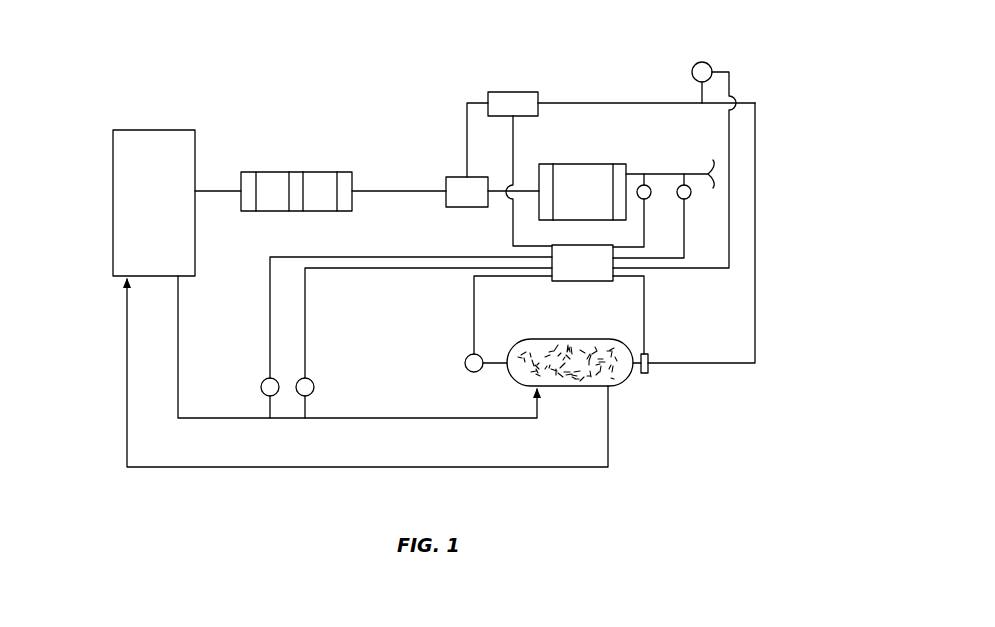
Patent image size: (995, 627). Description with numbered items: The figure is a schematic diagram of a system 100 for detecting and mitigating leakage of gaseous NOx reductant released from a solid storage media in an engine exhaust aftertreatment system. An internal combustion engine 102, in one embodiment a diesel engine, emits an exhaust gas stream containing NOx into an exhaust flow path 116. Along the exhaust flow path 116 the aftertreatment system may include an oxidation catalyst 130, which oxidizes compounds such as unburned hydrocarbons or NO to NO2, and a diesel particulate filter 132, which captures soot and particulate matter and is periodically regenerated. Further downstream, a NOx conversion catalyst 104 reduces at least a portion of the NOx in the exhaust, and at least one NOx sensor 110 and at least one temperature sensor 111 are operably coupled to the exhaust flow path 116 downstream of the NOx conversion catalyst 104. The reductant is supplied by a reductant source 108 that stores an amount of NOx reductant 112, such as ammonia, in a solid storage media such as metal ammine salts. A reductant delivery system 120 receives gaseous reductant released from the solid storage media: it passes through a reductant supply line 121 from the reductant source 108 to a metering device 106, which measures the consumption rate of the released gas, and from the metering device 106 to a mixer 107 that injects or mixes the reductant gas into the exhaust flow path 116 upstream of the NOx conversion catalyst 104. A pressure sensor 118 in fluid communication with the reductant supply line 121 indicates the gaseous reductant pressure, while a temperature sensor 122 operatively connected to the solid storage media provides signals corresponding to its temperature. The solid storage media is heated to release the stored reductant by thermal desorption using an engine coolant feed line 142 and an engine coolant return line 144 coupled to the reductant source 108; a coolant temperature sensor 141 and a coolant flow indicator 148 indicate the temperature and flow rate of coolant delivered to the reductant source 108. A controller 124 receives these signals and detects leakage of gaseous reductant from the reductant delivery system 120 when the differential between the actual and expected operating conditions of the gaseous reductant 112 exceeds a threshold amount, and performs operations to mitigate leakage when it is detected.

The system 100 is at (224, 55).
The internal combustion engine 102 is at (173, 216).
The NOx conversion catalyst 104 is at (602, 208).
The metering device 106 is at (515, 92).
The mixer 107 is at (467, 208).
The reductant source 108 is at (580, 339).
The NOx sensor 110 is at (651, 190).
The temperature sensor 111 is at (691, 193).
The NOx reductant 112 is at (583, 375).
The exhaust flow path 116 is at (398, 190).
The pressure sensor 118 is at (704, 62).
The reductant delivery system 120 is at (778, 216).
The reductant supply line 121 is at (757, 156).
The temperature sensor 122 is at (470, 372).
The controller 124 is at (600, 276).
The oxidation catalyst 130 is at (272, 171).
The diesel particulate filter 132 is at (321, 171).
The coolant temperature sensor 141 is at (262, 384).
The engine coolant feed line 142 is at (180, 333).
The engine coolant return line 144 is at (126, 347).
The coolant flow indicator 148 is at (313, 384).